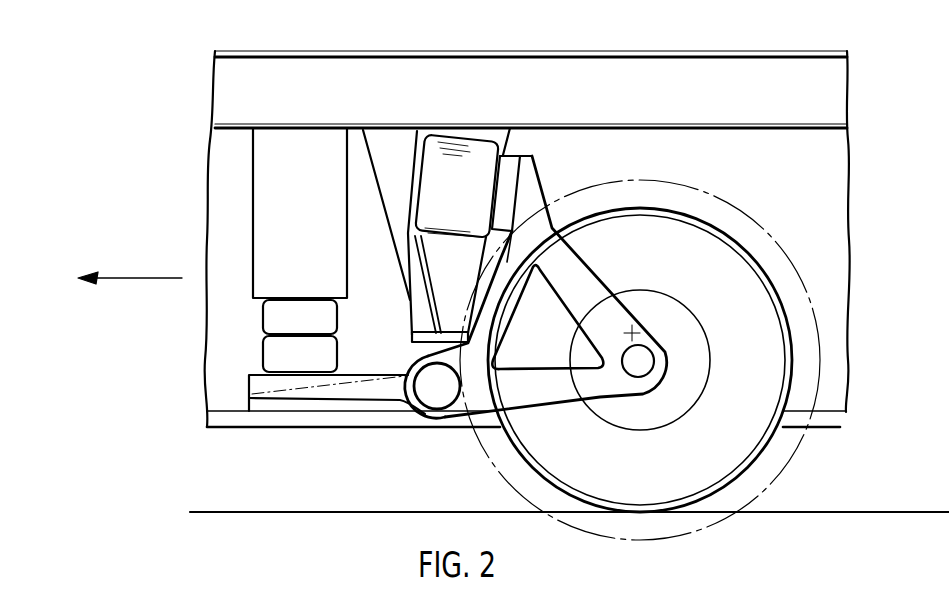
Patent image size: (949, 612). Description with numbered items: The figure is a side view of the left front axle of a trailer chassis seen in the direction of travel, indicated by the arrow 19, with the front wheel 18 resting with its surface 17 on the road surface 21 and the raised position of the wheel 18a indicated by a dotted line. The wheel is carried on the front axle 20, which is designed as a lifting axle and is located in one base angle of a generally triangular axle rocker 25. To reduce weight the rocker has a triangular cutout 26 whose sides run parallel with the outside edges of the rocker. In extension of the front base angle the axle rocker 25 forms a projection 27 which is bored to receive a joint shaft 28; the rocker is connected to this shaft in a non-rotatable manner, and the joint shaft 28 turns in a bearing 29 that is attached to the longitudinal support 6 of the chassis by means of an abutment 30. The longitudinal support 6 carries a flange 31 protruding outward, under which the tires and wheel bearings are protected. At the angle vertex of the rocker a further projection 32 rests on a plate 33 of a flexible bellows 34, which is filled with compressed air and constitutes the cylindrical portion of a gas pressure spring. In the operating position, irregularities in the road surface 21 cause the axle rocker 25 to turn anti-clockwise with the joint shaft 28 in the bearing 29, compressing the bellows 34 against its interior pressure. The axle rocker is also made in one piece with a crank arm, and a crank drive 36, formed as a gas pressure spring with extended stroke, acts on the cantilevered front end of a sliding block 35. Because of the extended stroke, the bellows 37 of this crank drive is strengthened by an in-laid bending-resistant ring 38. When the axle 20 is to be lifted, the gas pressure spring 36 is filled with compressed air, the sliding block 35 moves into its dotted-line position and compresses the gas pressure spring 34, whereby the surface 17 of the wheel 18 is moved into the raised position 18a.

The longitudinal support 6 is at (855, 167).
The surface of the wheel 17 is at (727, 490).
The front wheel 18 is at (753, 440).
The raised position of the wheel 18a is at (742, 222).
The direction of travel arrow 19 is at (132, 278).
The front axle 20 is at (648, 355).
The road surface 21 is at (870, 512).
The axle rocker 25 is at (568, 242).
The triangular cutout 26 is at (538, 347).
The projection 27 is at (457, 408).
The joint shaft 28 is at (430, 392).
The bearing 29 is at (418, 353).
The abutment 30 is at (390, 147).
The flange 31 is at (827, 93).
The further projection 32 is at (533, 156).
The plate 33 is at (513, 152).
The flexible bellows 34 is at (452, 152).
The sliding block 35 is at (253, 385).
The crank drive 36 is at (232, 362).
The bellows 37 is at (285, 312).
The bending-resistant ring 38 is at (273, 338).